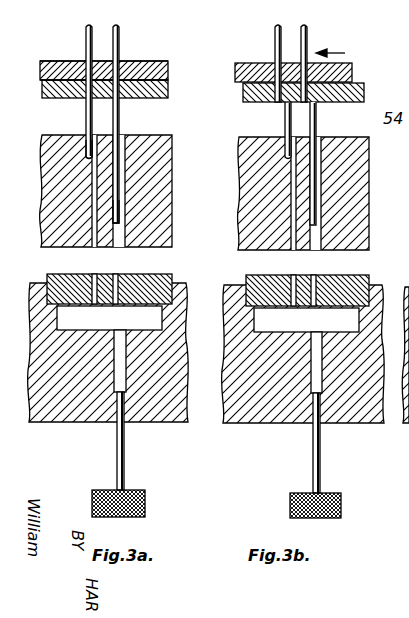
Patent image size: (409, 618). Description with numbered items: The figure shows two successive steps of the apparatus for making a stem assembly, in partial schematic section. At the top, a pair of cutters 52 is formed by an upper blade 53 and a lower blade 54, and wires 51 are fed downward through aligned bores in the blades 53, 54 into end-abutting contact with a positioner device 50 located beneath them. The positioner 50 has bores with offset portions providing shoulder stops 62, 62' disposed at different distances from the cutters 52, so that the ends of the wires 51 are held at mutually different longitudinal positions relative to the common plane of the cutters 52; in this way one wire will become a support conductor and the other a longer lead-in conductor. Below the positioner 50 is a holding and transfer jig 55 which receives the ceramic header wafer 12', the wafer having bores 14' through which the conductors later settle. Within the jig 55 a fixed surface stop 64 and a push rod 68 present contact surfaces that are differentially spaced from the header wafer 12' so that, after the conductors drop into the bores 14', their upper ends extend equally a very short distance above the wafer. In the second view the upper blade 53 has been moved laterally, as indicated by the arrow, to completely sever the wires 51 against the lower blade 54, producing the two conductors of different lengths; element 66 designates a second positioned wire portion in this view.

In FIG. 3A, the positioner device 50 is at (42, 146).
In FIG. 3B, the positioner device 50 is at (241, 176).
In FIG. 3A, the wires 51 is at (119, 35).
In FIG. 3B, the wires 51 is at (306, 28).
In FIG. 3A, the cutters 52 is at (48, 60).
In FIG. 3A, the upper blade 53 is at (158, 62).
In FIG. 3B, the upper blade 53 is at (250, 63).
In FIG. 3A, the lower blade 54 is at (166, 93).
In FIG. 3B, the lower blade 54 is at (361, 83).
In FIG. 3A, the holding and transfer jig 55 is at (72, 423).
In FIG. 3B, the holding and transfer jig 55 is at (294, 424).
In FIG. 3A, the shoulder stop 62 is at (73, 136).
In FIG. 3A, the shoulder stop 62' is at (99, 236).
In FIG. 3A, the header wafer 12' is at (109, 278).
In FIG. 3B, the bores 14' is at (307, 280).
In FIG. 3A, the fixed surface stop 64 is at (99, 320).
In FIG. 3B, the fixed surface stop 64 is at (299, 322).
In FIG. 3B, the pin 66 is at (318, 128).
In FIG. 3A, the push rod 68 is at (127, 457).
In FIG. 3B, the push rod 68 is at (321, 470).